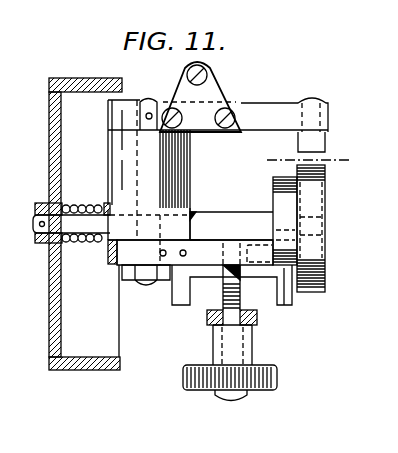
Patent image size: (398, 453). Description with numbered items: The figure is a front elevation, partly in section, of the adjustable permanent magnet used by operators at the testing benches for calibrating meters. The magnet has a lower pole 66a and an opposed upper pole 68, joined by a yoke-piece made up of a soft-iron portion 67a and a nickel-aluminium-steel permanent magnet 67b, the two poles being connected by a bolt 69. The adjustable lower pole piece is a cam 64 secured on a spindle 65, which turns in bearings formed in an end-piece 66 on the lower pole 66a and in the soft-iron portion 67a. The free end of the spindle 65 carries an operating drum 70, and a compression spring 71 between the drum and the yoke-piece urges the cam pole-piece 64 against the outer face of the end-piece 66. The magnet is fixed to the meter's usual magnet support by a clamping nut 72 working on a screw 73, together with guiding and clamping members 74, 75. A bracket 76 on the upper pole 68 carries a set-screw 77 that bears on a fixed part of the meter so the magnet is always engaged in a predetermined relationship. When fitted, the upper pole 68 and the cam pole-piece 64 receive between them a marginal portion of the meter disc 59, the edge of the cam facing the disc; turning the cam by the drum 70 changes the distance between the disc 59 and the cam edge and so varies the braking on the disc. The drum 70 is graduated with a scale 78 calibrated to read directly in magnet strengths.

The meter disc 59 is at (331, 160).
The cam pole-piece 64 is at (312, 197).
The spindle 65 is at (241, 225).
The end-piece 66 is at (283, 198).
The lower pole 66a is at (110, 263).
The soft-iron portion 67a is at (190, 210).
The permanent magnet 67b is at (117, 168).
The upper pole 68 is at (278, 110).
The bolt 69 is at (112, 147).
The operating drum 70 is at (53, 322).
The compression spring 71 is at (62, 205).
The clamping nut 72 is at (280, 373).
The screw 73 is at (233, 287).
The guiding and clamping member 74 is at (260, 283).
The guiding and clamping member 75 is at (218, 313).
The bracket 76 is at (185, 100).
The set-screw 77 is at (206, 69).
The scale 78 is at (105, 78).